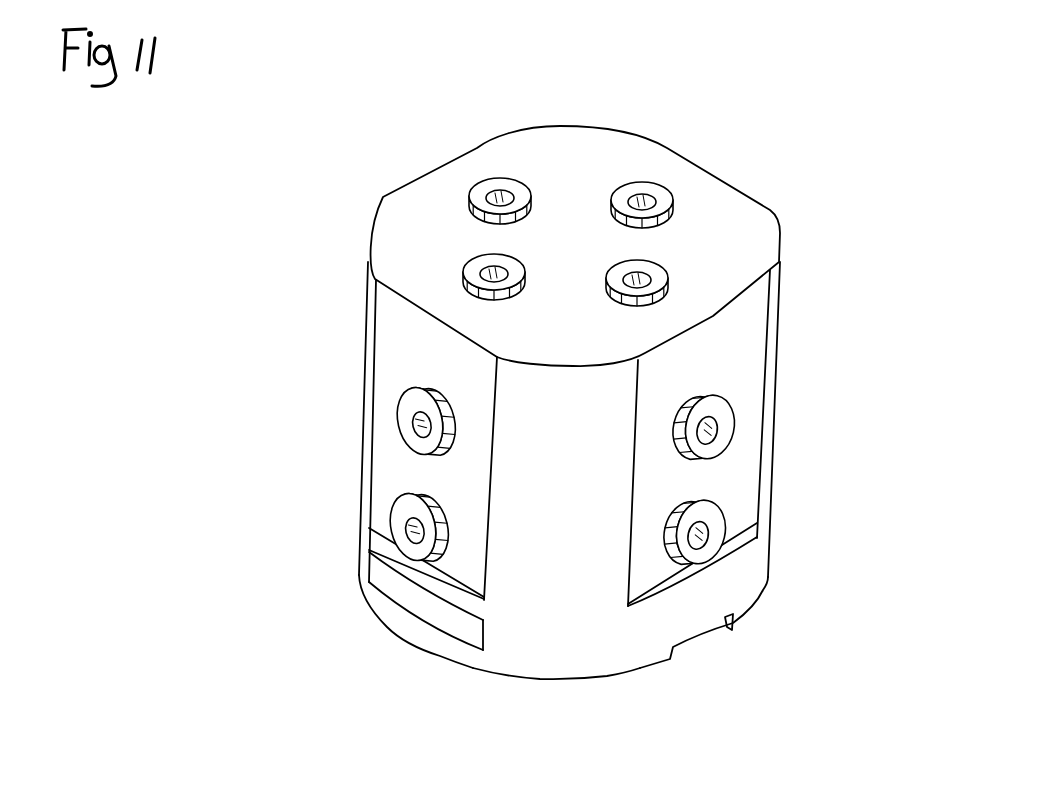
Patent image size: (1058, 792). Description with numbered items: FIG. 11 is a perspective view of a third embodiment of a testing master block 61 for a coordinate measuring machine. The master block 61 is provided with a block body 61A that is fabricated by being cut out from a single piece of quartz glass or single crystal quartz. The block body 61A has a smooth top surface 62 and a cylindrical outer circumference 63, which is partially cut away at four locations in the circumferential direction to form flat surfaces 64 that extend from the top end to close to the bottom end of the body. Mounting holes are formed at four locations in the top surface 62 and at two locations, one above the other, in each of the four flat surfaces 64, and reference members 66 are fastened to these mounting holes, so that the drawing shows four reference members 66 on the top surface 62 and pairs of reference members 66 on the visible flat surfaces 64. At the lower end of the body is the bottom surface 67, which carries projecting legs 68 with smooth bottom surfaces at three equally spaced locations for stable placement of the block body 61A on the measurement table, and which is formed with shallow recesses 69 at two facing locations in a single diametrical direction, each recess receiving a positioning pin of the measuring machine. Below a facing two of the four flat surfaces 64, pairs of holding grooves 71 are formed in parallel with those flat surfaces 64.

The master block 61 is at (572, 407).
The block body 61A is at (610, 651).
The top surface 62 is at (570, 163).
The cylindrical outer circumference 63 is at (543, 127).
The flat surface 64 is at (440, 165).
The reference member 66 is at (493, 177).
The bottom surface 67 is at (513, 678).
The projecting leg 68 is at (410, 647).
The recess 69 is at (703, 645).
The holding groove 71 is at (373, 576).